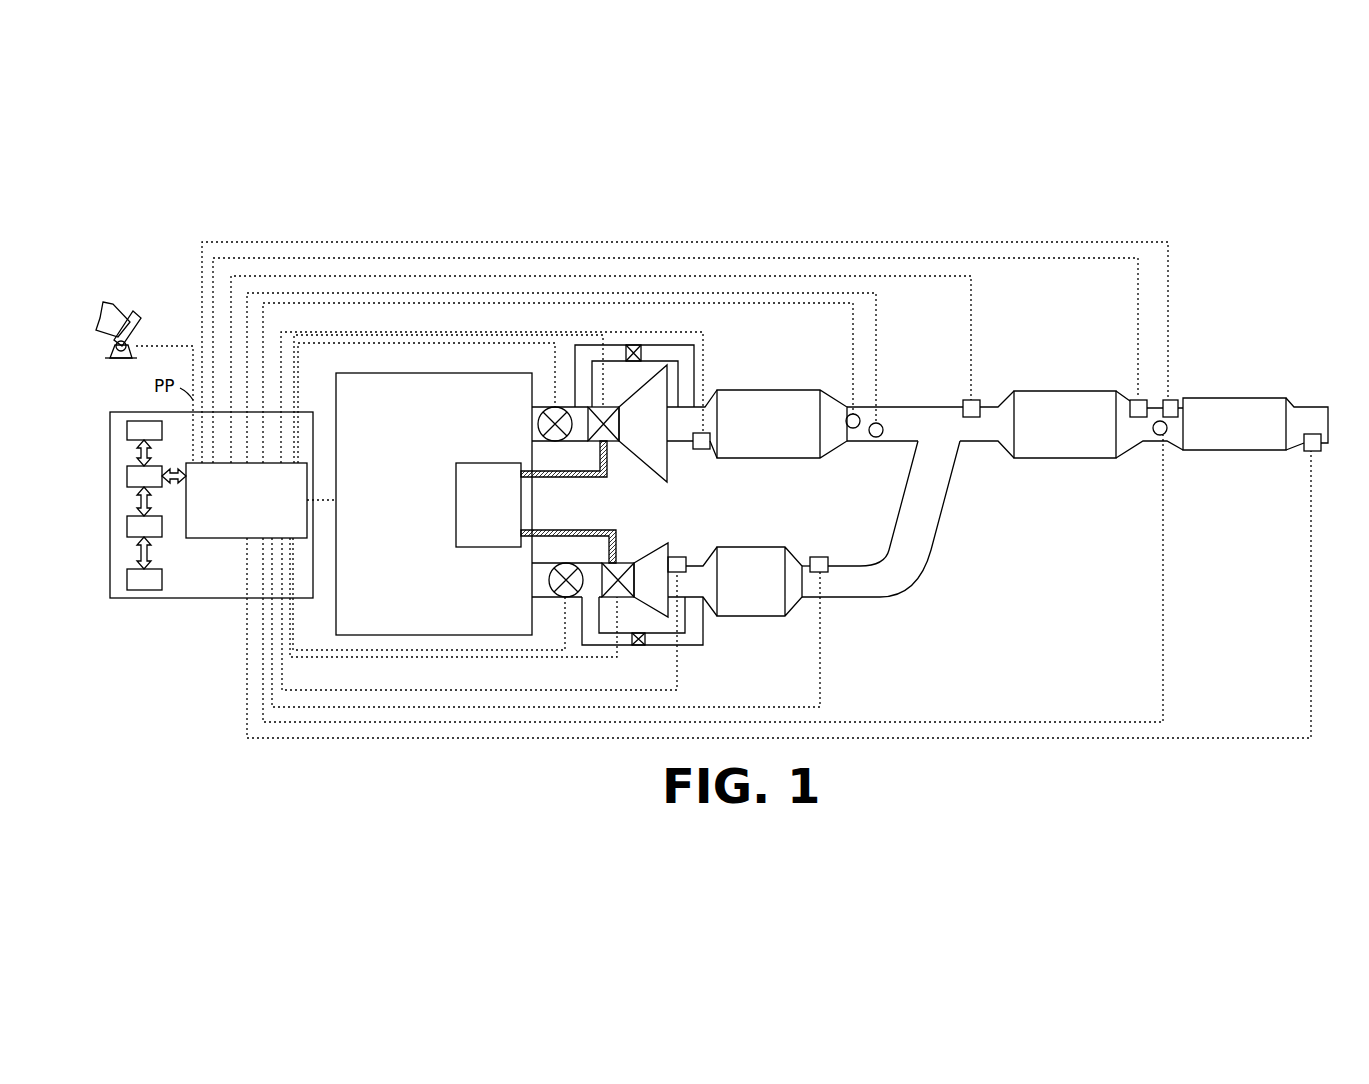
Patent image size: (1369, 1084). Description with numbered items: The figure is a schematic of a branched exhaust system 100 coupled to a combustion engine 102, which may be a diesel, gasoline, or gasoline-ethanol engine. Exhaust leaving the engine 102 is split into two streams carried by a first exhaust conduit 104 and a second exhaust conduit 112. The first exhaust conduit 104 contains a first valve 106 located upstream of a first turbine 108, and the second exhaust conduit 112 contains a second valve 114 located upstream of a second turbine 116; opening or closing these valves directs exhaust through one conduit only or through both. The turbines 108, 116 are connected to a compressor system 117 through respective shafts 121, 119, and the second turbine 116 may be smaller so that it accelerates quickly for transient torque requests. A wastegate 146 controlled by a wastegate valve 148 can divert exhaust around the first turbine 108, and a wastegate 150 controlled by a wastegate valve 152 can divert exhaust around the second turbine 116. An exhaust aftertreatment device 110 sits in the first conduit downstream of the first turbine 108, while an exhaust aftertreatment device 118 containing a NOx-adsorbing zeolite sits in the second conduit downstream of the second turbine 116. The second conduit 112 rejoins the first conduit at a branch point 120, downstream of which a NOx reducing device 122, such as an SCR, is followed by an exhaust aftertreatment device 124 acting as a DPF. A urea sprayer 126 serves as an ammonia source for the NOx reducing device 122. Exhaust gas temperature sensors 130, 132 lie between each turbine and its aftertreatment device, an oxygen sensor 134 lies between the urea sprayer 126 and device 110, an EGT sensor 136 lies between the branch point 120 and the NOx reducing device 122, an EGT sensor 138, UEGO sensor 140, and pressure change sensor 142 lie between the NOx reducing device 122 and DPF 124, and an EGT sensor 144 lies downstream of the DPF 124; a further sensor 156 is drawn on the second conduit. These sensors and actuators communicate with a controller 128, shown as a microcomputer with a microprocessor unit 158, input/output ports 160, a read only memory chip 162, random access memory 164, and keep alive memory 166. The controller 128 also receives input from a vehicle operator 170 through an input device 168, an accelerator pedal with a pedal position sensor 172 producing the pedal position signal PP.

The branched exhaust system 100 is at (1026, 629).
The combustion engine 102 is at (434, 504).
The first exhaust conduit 104 is at (522, 424).
The first valve 106 is at (560, 442).
The first turbine 108 is at (640, 466).
The exhaust aftertreatment device 110 is at (782, 424).
The second exhaust conduit 112 is at (522, 581).
The second valve 114 is at (570, 565).
The second turbine 116 is at (645, 558).
The compressor system 117 is at (488, 505).
The exhaust aftertreatment device 118 is at (759, 581).
The shaft 119 is at (545, 530).
The branch point 120 is at (948, 443).
The shaft 121 is at (573, 477).
The NOx reducing device 122 is at (1065, 424).
The exhaust aftertreatment device 124 is at (1234, 424).
The urea sprayer 126 is at (882, 424).
The controller 128 is at (185, 600).
The exhaust gas temperature sensor 130 is at (703, 449).
The exhaust gas temperature sensor 132 is at (686, 558).
The oxygen sensor 134 is at (848, 416).
The exhaust gas temperature sensor 136 is at (980, 402).
The exhaust gas temperature sensor 138 is at (1136, 400).
The UEGO sensor 140 is at (1156, 434).
The pressure change sensor 142 is at (1172, 400).
The exhaust gas temperature sensor 144 is at (1325, 447).
The wastegate 146 is at (577, 346).
The wastegate valve 148 is at (633, 345).
The wastegate 150 is at (588, 645).
The wastegate valve 152 is at (638, 645).
The exhaust sensor 156 is at (828, 558).
The microprocessor unit 158 is at (127, 476).
The input/output ports 160 is at (246, 500).
The read only memory chip 162 is at (127, 425).
The random access memory 164 is at (127, 524).
The keep alive memory 166 is at (127, 574).
The input device 168 is at (142, 321).
The vehicle operator 170 is at (95, 316).
The pedal position sensor 172 is at (105, 346).